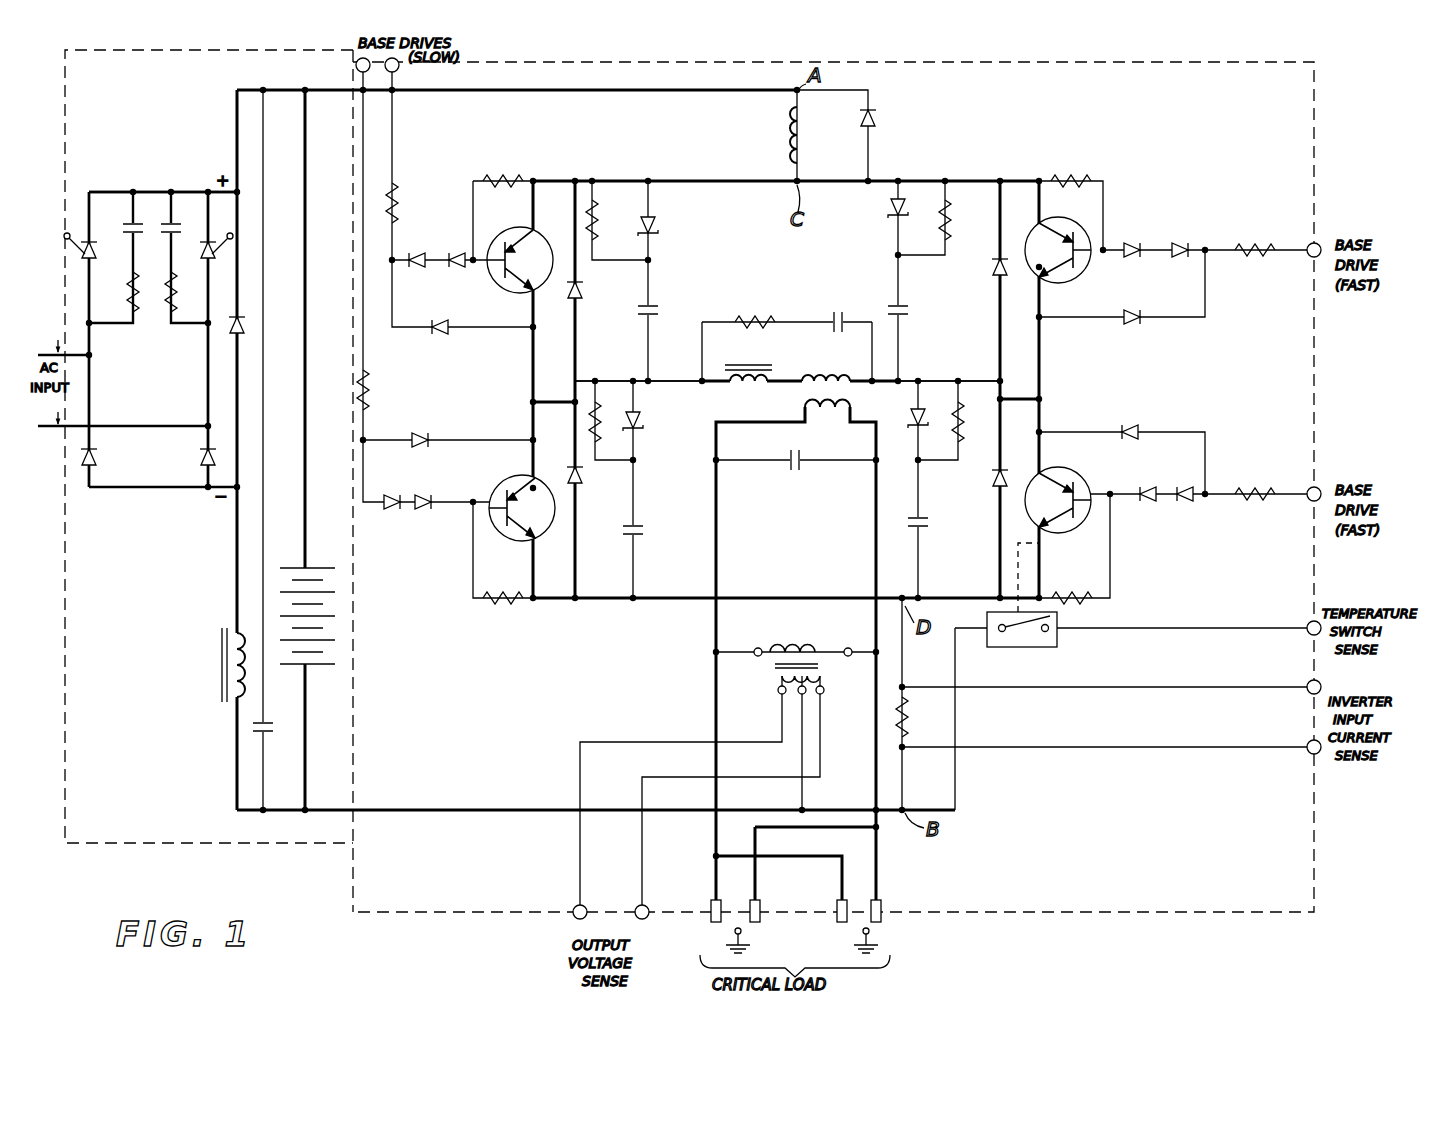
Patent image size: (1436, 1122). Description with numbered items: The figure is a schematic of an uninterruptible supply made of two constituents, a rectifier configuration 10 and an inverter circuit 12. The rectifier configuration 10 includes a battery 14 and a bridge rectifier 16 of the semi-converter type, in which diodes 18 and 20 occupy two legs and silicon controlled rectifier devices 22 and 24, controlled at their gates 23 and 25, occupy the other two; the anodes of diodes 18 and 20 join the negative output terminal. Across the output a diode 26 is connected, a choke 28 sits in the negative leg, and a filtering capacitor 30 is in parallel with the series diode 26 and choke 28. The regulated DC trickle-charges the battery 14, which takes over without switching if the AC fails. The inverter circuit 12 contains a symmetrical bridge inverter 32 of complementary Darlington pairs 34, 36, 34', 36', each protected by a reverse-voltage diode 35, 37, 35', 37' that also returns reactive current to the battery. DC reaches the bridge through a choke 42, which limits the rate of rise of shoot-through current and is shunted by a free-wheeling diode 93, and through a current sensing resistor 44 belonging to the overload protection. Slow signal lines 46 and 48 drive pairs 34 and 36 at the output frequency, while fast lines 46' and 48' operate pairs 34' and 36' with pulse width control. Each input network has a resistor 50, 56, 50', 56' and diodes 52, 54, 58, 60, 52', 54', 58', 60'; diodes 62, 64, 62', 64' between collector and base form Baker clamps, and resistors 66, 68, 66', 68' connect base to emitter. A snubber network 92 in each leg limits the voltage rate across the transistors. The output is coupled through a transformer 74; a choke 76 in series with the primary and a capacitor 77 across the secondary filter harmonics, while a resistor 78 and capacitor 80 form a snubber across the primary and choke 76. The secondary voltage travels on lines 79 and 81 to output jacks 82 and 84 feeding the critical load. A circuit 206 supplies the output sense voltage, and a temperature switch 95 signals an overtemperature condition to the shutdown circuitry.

The rectifier configuration 10 is at (165, 850).
The inverter circuit 12 is at (494, 916).
The battery 14 is at (290, 593).
The bridge rectifier 16 is at (160, 392).
The diode 18 is at (98, 459).
The diode 20 is at (201, 458).
The silicon controlled rectifier device 22 is at (120, 267).
The gate 23 is at (68, 250).
The silicon controlled rectifier device 24 is at (184, 267).
The gate 25 is at (232, 236).
The diode 26 is at (246, 330).
The choke 28 is at (221, 687).
The capacitor 30 is at (264, 733).
The bridge inverter 32 is at (792, 268).
The Darlington pair of transistors 34 is at (519, 245).
The Darlington pair of transistors 34' is at (1059, 240).
The diode 35 is at (600, 295).
The diode 35' is at (977, 280).
The Darlington pair of transistors 36 is at (519, 499).
The Darlington pair of transistors 36' is at (1071, 490).
The diode 37 is at (596, 496).
The diode 37' is at (980, 492).
The choke 42 is at (787, 135).
The sensing resistor 44 is at (908, 728).
The signal line 46 is at (416, 111).
The signal line 46' is at (1288, 266).
The signal line 48 is at (343, 111).
The signal line 48' is at (1290, 474).
The resistor 50 is at (415, 203).
The resistor 50' is at (1253, 231).
The diode 52 is at (415, 243).
The diode 52' is at (1191, 231).
The diode 54 is at (454, 243).
The diode 54' is at (1140, 231).
The resistor 56 is at (382, 389).
The resistor 56' is at (1255, 511).
The diode 58 is at (387, 524).
The diode 58' is at (1195, 511).
The diode 60 is at (435, 524).
The diode 60' is at (1158, 478).
The diode 62 is at (440, 309).
The diode 62' is at (1127, 301).
The diode 64 is at (410, 422).
The diode 64' is at (1130, 414).
The resistor 66 is at (503, 166).
The resistor 66' is at (1071, 163).
The resistor 68 is at (508, 618).
The resistor 68' is at (1094, 609).
The transformer 74 is at (841, 377).
The choke 76 is at (758, 376).
The capacitor 77 is at (797, 468).
The resistor 78 is at (753, 320).
The line or buss 79 is at (719, 635).
The capacitor 80 is at (840, 320).
The line or buss 81 is at (876, 631).
The output jack 82 is at (710, 921).
The output jack 84 is at (886, 923).
The snubber network 92 is at (672, 279).
The free-wheeling diode 93 is at (878, 128).
The temperature switch 95 is at (1045, 648).
The circuit 206 is at (630, 882).